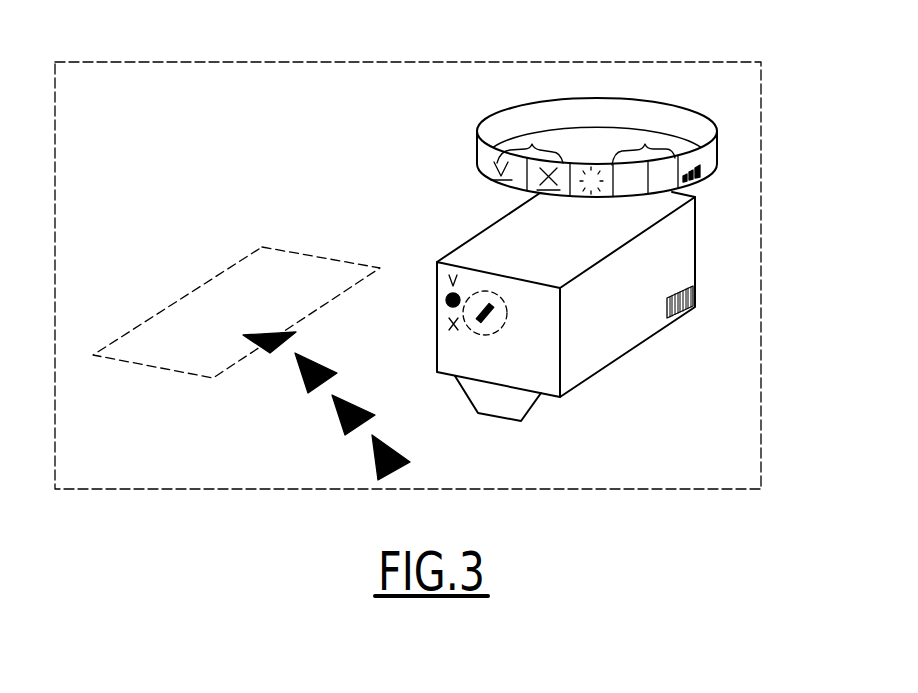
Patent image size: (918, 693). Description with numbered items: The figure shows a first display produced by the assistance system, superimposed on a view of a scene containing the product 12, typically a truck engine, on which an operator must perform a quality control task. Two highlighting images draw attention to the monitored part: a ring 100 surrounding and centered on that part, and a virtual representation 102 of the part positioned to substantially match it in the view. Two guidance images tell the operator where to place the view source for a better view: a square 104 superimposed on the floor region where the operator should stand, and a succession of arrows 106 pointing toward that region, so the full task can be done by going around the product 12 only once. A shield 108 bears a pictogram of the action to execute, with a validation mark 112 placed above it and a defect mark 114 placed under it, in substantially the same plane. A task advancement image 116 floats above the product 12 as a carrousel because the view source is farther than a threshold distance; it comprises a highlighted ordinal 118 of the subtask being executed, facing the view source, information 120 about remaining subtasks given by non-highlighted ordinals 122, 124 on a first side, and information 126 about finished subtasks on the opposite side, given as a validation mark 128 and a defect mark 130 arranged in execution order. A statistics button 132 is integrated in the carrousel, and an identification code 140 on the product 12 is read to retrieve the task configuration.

The product 12 is at (605, 343).
The ring 100 is at (517, 290).
The virtual representation 102 is at (508, 334).
The square 104 is at (281, 260).
The succession of arrows 106 is at (314, 433).
The shield 108 is at (426, 286).
The validation mark 112 is at (442, 242).
The defect mark 114 is at (421, 330).
The task advancement image 116 is at (745, 133).
The ordinal 118 is at (594, 137).
The information about remaining subtasks 120 is at (642, 138).
The ordinal of remaining subtask 122 is at (632, 187).
The ordinal of remaining subtask 124 is at (657, 187).
The information about the status of finished subtasks 126 is at (531, 128).
The validation mark 128 is at (483, 163).
The defect mark 130 is at (540, 194).
The statistics button 132 is at (701, 182).
The identification code 140 is at (696, 298).